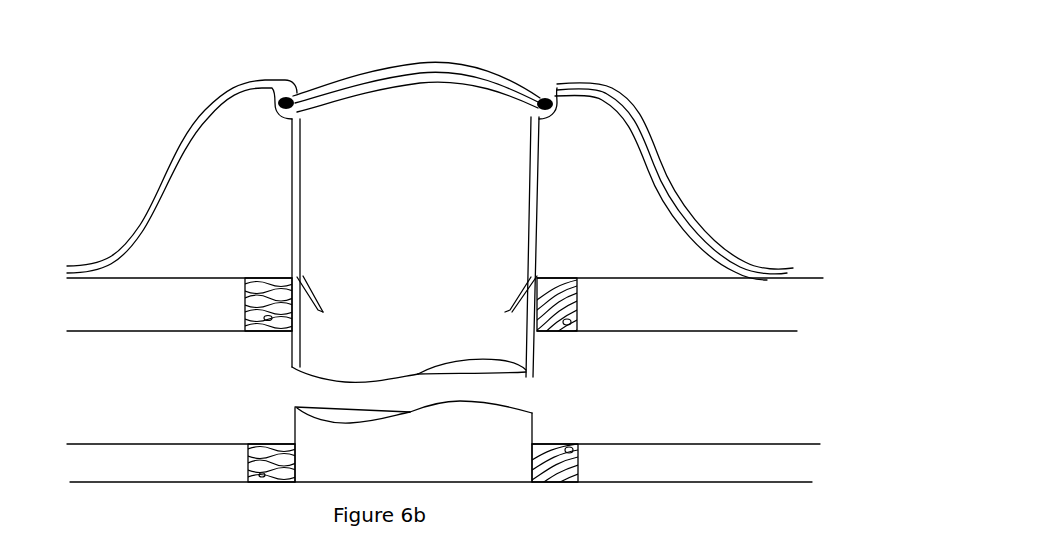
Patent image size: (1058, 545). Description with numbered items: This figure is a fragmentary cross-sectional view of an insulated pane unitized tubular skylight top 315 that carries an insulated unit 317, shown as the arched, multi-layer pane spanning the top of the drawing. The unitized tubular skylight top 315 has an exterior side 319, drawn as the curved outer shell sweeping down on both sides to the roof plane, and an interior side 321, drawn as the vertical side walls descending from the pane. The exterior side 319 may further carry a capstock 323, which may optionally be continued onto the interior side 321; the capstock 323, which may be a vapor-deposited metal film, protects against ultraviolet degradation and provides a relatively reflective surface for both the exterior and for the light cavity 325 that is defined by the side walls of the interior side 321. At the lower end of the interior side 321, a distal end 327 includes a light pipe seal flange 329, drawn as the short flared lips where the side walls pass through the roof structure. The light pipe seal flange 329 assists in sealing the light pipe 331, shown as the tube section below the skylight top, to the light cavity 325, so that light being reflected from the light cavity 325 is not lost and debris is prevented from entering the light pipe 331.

The unitized tubular skylight top 315 is at (258, 80).
The insulated unit 317 is at (370, 70).
The exterior side 319 is at (657, 142).
The interior side 321 is at (535, 139).
The capstock 323 is at (663, 167).
The light cavity 325 is at (422, 204).
The distal end 327 is at (513, 307).
The light pipe seal flange 329 is at (520, 292).
The light pipe 331 is at (530, 353).